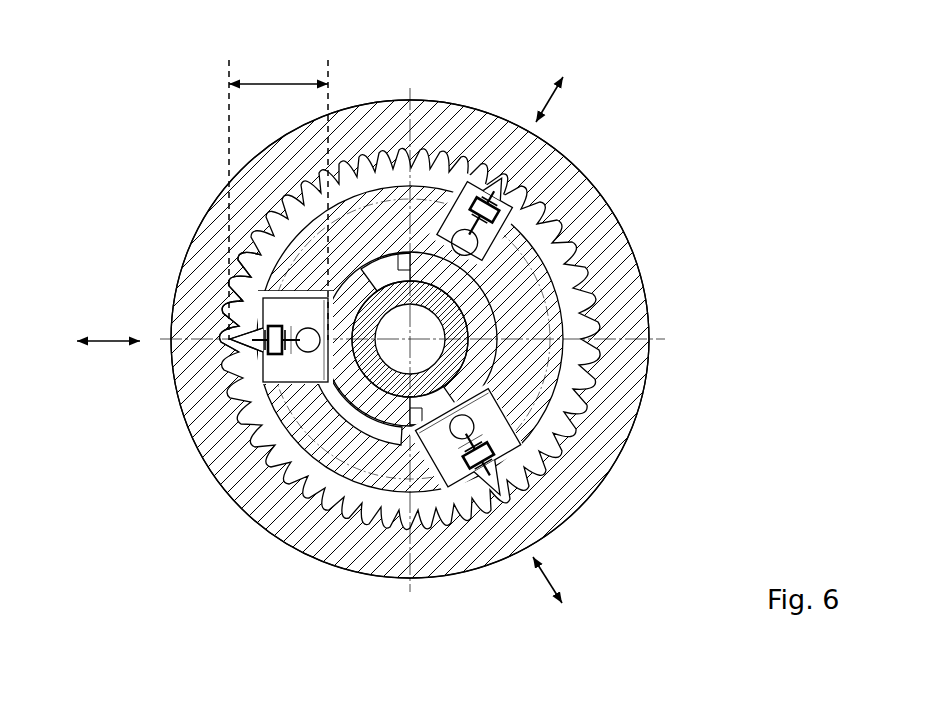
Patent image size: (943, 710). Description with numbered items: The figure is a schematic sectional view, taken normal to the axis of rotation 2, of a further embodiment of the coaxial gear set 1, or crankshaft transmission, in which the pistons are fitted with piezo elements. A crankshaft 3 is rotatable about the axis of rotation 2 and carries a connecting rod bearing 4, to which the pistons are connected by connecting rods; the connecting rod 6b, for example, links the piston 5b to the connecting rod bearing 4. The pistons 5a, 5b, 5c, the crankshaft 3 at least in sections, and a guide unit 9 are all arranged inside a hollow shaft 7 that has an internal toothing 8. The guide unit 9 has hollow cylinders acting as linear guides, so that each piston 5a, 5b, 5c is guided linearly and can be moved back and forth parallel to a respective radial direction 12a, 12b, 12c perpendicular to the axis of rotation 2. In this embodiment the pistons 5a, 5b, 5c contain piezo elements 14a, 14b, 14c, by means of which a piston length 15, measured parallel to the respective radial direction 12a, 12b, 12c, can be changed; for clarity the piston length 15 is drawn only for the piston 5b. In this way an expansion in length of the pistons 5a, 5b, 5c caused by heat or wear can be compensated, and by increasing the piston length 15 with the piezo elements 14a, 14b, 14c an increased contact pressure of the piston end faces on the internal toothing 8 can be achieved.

The coaxial gear set 1 is at (187, 100).
The axis of rotation 2 is at (415, 339).
The crankshaft 3 is at (230, 340).
The connecting rod bearing 4 is at (246, 340).
The piston 5a is at (500, 460).
The piston 5b is at (293, 372).
The piston 5c is at (507, 177).
The connecting rod 6b is at (268, 282).
The hollow shaft 7 is at (528, 155).
The internal toothing 8 is at (277, 227).
The guide unit 9 is at (510, 432).
The radial direction 12a is at (543, 589).
The radial direction 12b is at (104, 347).
The radial direction 12c is at (534, 79).
The piezo element 14a is at (490, 470).
The piezo element 14b is at (267, 353).
The piezo element 14c is at (500, 204).
The piston length 15 is at (297, 83).